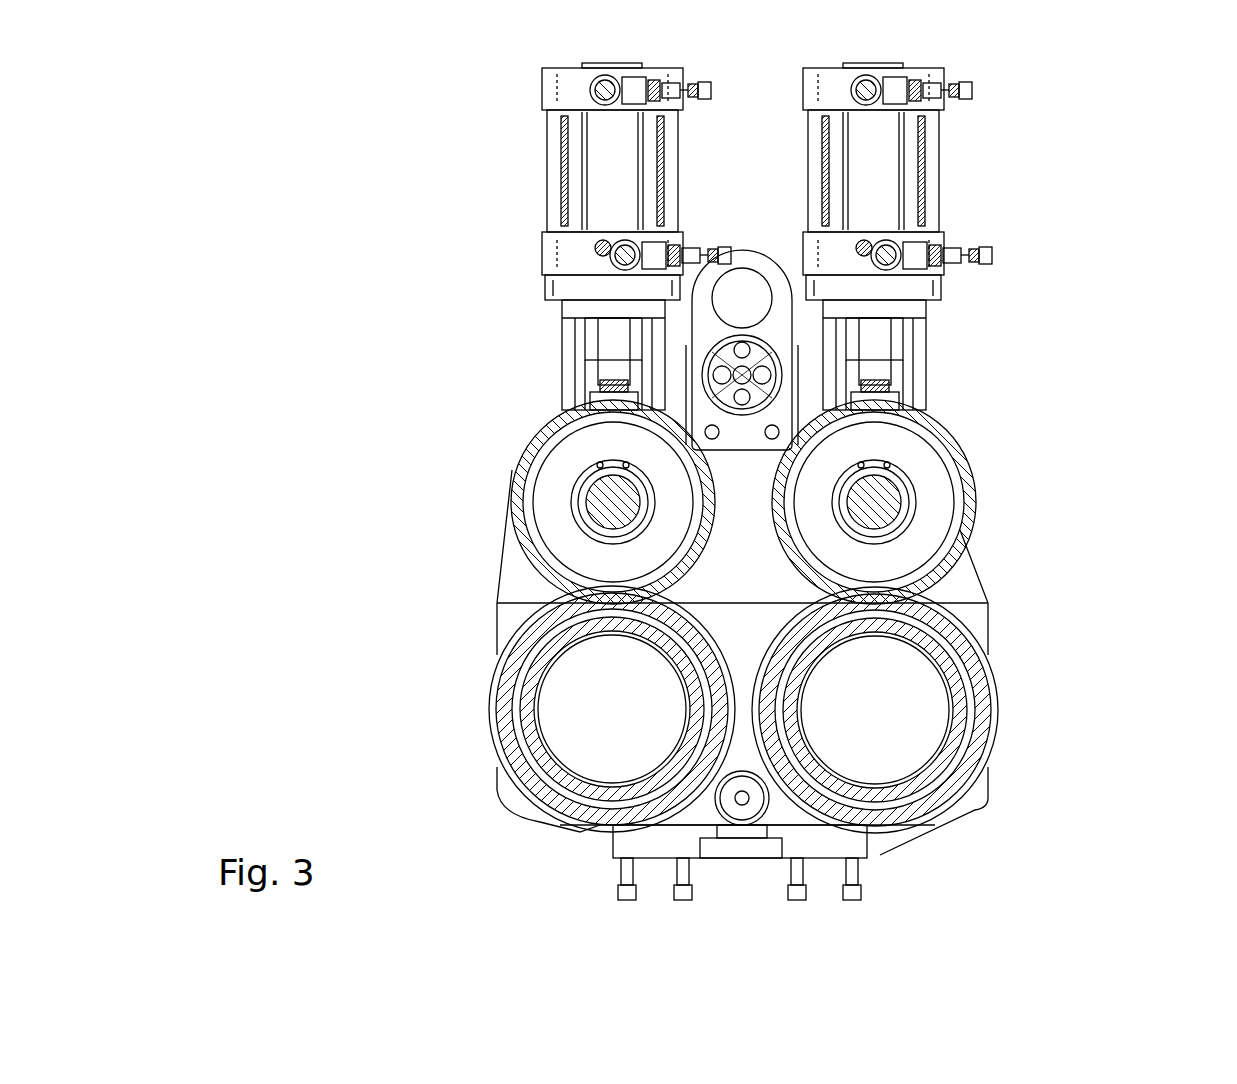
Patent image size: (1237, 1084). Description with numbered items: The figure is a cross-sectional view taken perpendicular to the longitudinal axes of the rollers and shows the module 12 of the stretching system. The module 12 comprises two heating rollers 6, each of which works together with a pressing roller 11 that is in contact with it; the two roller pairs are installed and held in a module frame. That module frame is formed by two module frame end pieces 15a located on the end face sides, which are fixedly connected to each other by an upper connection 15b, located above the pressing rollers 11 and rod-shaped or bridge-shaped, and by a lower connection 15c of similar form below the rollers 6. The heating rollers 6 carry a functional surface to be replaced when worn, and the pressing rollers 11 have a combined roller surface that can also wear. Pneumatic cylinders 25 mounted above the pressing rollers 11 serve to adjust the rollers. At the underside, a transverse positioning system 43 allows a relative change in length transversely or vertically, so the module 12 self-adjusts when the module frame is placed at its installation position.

The module 12 is at (455, 137).
The pneumatic cylinder 25 is at (520, 193).
The upper connection 15b is at (750, 298).
The module frame end piece 15a is at (960, 593).
The lower connection 15c is at (757, 800).
The pressing roller 11 is at (508, 483).
The heating roller 6 is at (478, 730).
The transverse positioning system 43 is at (742, 862).